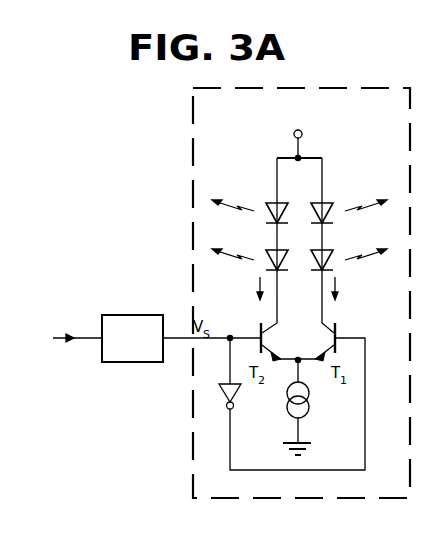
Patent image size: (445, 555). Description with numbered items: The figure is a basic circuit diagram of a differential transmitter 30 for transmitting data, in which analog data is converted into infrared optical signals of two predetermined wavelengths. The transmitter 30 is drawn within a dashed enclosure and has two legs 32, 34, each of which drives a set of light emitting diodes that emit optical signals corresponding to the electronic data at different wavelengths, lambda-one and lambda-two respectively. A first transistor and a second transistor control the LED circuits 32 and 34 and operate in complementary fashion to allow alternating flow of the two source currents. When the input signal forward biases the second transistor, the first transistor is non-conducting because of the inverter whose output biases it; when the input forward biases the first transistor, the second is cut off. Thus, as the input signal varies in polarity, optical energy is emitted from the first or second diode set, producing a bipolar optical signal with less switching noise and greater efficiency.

The differential transmitter 30 is at (389, 88).
The leg (LED circuit) of differential transmitter 32 is at (323, 161).
The leg (LED circuit) of differential transmitter 34 is at (276, 161).